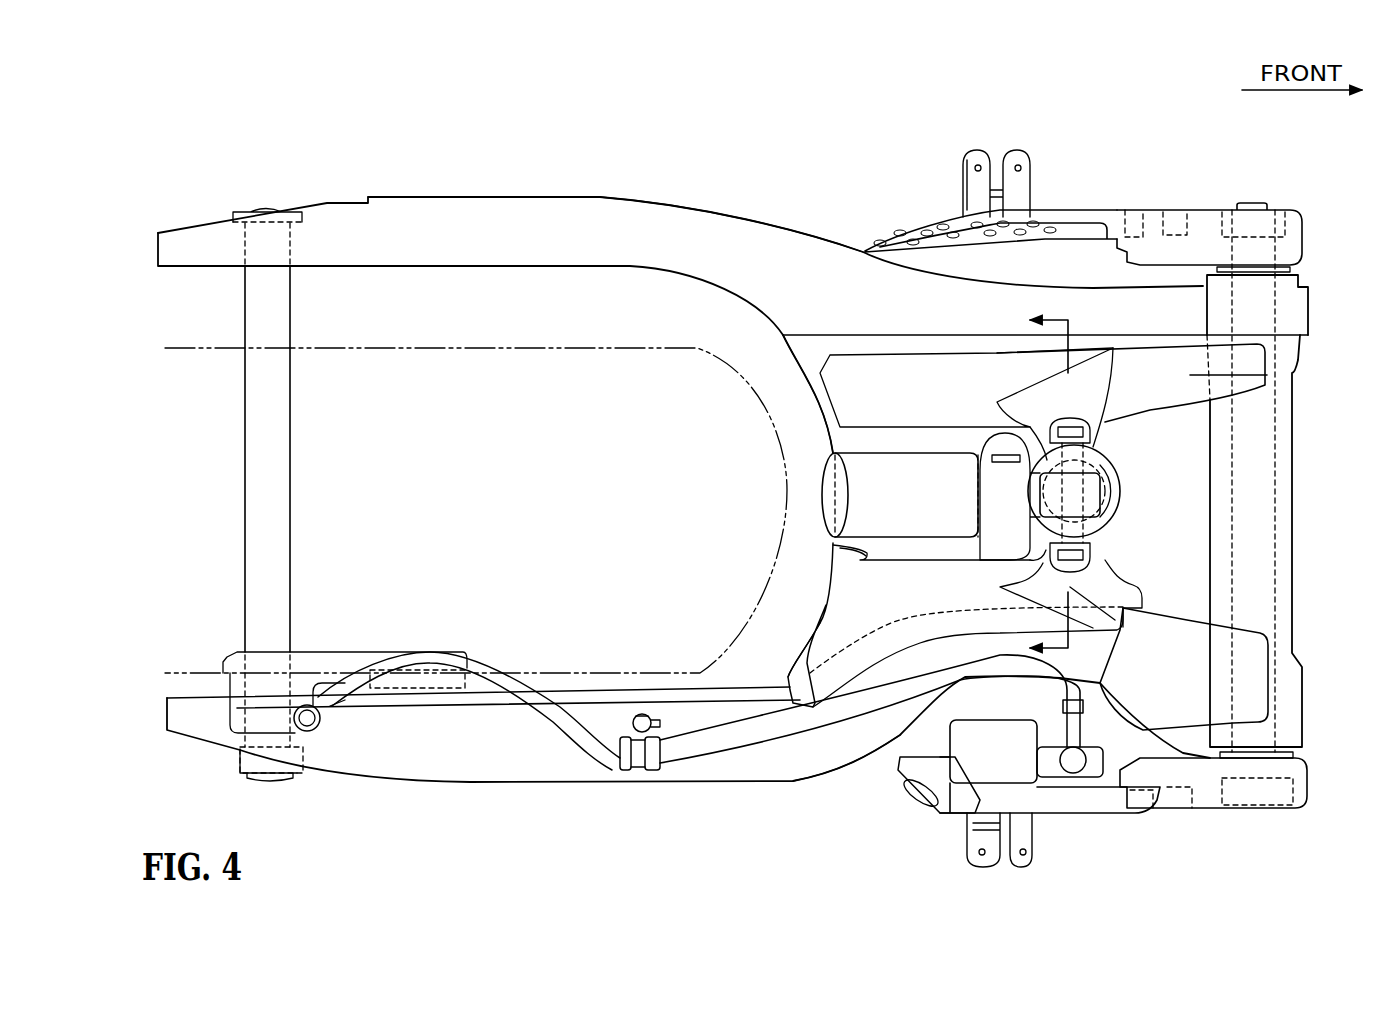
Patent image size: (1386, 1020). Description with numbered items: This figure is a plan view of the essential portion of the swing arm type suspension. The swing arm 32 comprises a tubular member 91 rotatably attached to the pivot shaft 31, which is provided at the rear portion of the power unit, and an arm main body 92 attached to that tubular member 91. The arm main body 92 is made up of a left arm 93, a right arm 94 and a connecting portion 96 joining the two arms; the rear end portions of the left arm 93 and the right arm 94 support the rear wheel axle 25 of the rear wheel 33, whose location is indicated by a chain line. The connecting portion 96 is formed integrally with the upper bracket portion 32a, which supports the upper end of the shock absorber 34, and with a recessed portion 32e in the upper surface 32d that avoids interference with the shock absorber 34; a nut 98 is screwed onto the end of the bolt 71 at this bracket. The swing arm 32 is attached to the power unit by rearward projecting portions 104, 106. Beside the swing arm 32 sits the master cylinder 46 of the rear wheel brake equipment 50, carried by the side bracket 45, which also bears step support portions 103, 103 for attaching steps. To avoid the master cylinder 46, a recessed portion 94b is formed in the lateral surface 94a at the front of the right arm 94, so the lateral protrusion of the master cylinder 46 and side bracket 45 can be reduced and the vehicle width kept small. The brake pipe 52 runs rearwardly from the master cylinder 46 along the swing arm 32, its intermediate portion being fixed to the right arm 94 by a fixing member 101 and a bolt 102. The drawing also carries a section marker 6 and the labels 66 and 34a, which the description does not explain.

The swing arm 32 is at (423, 185).
The upper bracket portion 32a is at (1013, 382).
The upper surface 32d is at (856, 602).
The recessed portion 32e is at (812, 551).
The arm main body 92 is at (556, 191).
The left arm 93 is at (704, 216).
The rear wheel 33 is at (471, 346).
The rear wheel axle 25 is at (277, 485).
The connecting portion 96 is at (808, 410).
The cylindrical shaft 66 is at (826, 494).
The side bracket 45 is at (1078, 210).
The step support portions 103 is at (1012, 150).
The rearward projecting portion 104 is at (1293, 243).
The nut 98 is at (1290, 372).
The tubular member 91 is at (1283, 423).
The pivot shaft 31 is at (1277, 477).
The shock absorber 34 is at (1120, 460).
The joint center member 34a is at (1085, 493).
The bolt 71 is at (1085, 563).
The section line 6 is at (1065, 484).
The rear wheel brake equipment 50 is at (555, 795).
The brake pipe 52 is at (547, 717).
The bolt 102 is at (604, 732).
The fixing member 101 is at (638, 762).
The right arm 94 is at (718, 775).
The lateral surface 94a is at (784, 781).
The recessed portion 94b is at (1183, 757).
The master cylinder 46 is at (977, 790).
The rearward projecting portion 106 is at (1300, 781).